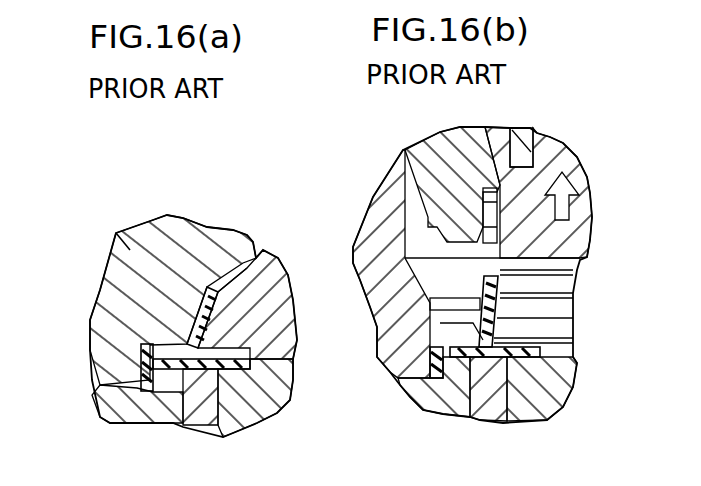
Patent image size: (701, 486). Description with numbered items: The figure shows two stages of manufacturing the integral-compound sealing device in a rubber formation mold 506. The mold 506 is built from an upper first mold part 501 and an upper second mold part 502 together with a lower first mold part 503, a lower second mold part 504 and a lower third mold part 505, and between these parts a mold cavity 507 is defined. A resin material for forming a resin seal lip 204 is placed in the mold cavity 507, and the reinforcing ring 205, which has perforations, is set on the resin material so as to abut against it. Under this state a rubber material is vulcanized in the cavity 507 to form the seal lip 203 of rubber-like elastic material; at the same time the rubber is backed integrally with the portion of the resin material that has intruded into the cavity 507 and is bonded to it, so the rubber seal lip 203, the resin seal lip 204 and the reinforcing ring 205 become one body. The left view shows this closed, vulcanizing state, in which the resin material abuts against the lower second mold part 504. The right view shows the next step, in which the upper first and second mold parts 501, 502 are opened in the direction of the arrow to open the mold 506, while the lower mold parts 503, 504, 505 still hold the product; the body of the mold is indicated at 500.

In FIG. 16A, the housing body 500 is at (107, 293).
In FIG. 16B, the housing body 500 is at (378, 213).
In FIG. 16A, the upper first mold part 501 is at (130, 250).
In FIG. 16B, the upper first mold part 501 is at (535, 130).
In FIG. 16A, the upper second mold part 502 is at (262, 263).
In FIG. 16B, the upper second mold part 502 is at (590, 240).
In FIG. 16A, the lower first mold part 503 is at (260, 406).
In FIG. 16B, the lower first mold part 503 is at (543, 416).
In FIG. 16A, the lower second mold part 504 is at (201, 421).
In FIG. 16B, the lower second mold part 504 is at (487, 411).
In FIG. 16A, the lower third mold part 505 is at (133, 415).
In FIG. 16B, the lower third mold part 505 is at (426, 400).
In FIG. 16A, the rubber formation mold 506 is at (244, 212).
In FIG. 16B, the rubber formation mold 506 is at (592, 167).
In FIG. 16A, the mold cavity 507 is at (200, 286).
In FIG. 16A, the seal lip 203 is at (150, 347).
In FIG. 16B, the seal lip 203 is at (500, 318).
In FIG. 16A, the resin seal lip 204 is at (250, 361).
In FIG. 16B, the resin seal lip 204 is at (543, 350).
In FIG. 16A, the reinforcing ring 205 is at (141, 384).
In FIG. 16B, the reinforcing ring 205 is at (443, 374).